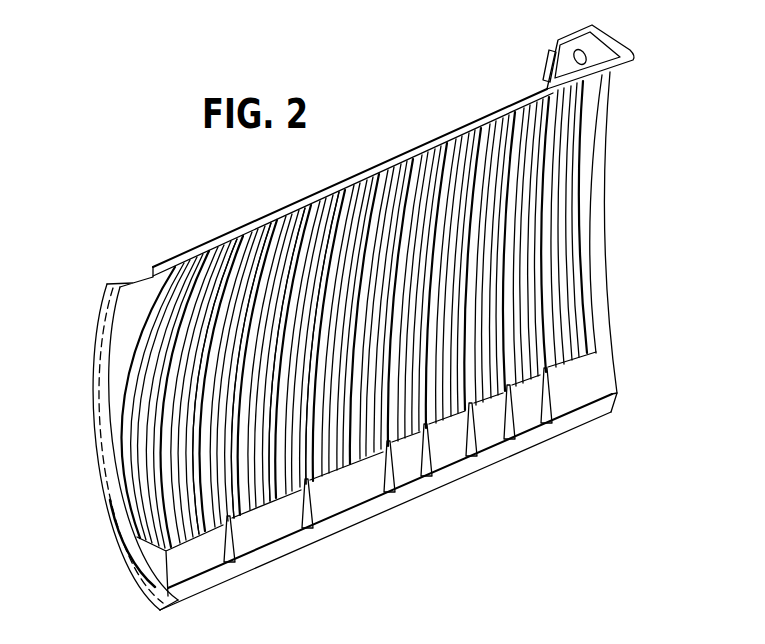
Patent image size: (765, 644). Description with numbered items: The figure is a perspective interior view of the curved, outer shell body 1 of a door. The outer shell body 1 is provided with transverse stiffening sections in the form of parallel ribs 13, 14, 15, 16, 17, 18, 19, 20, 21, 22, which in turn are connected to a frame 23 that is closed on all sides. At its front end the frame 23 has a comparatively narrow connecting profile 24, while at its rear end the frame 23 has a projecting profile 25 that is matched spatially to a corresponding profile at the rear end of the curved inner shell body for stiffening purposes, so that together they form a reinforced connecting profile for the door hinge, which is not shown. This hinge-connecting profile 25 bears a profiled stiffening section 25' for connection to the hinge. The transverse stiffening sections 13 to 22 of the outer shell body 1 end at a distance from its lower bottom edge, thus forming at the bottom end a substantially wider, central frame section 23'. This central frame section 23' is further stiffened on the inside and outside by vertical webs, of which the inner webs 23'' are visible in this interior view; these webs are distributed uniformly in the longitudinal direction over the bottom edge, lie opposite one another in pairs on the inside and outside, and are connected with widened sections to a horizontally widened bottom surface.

The outer shell body 1 is at (58, 213).
The rib 13 is at (211, 241).
The rib 14 is at (240, 229).
The rib 15 is at (265, 217).
The rib 16 is at (296, 203).
The rib 17 is at (338, 184).
The rib 18 is at (390, 447).
The rib 19 is at (424, 432).
The rib 20 is at (470, 406).
The rib 21 is at (508, 395).
The rib 22 is at (546, 367).
The frame 23 is at (400, 341).
The central frame section 23' is at (190, 578).
The vertical web 23'' is at (286, 537).
The connecting profile 24 is at (92, 467).
The projecting profile 25 is at (607, 47).
The profiled stiffening section 25' is at (523, 56).